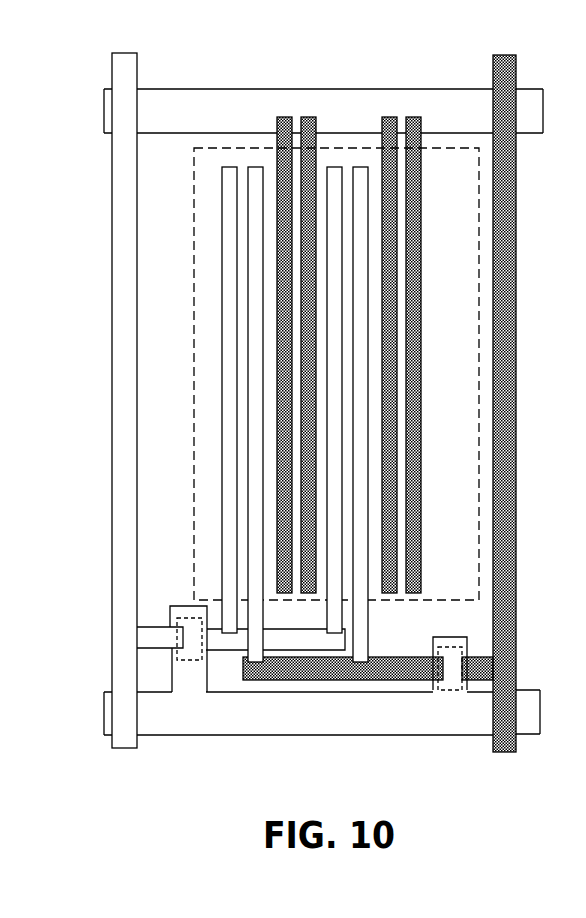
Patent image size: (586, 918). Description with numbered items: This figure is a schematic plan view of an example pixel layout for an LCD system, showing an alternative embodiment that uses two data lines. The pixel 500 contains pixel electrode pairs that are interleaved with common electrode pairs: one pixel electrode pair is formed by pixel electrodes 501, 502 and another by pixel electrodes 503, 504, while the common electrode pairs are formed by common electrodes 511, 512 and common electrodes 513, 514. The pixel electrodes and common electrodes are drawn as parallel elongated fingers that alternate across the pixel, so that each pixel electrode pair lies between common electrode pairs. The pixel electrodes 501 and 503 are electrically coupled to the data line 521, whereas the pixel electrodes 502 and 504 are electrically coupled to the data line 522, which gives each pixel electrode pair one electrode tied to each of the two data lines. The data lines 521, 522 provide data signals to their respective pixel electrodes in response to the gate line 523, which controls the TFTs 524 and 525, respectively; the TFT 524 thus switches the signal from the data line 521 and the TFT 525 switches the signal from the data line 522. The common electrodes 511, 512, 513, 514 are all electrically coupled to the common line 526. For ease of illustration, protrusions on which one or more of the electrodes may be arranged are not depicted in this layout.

The pixel 500 is at (462, 592).
The pixel electrode 501 is at (220, 240).
The pixel electrode 502 is at (250, 327).
The pixel electrode 503 is at (330, 240).
The pixel electrode 504 is at (356, 322).
The common electrode 511 is at (276, 413).
The common electrode 512 is at (300, 495).
The common electrode 513 is at (386, 413).
The common electrode 514 is at (422, 493).
The data line 521 is at (137, 579).
The data line 522 is at (517, 577).
The gate line 523 is at (330, 733).
The TFT 524 is at (185, 662).
The TFT 525 is at (448, 692).
The common line 526 is at (297, 94).